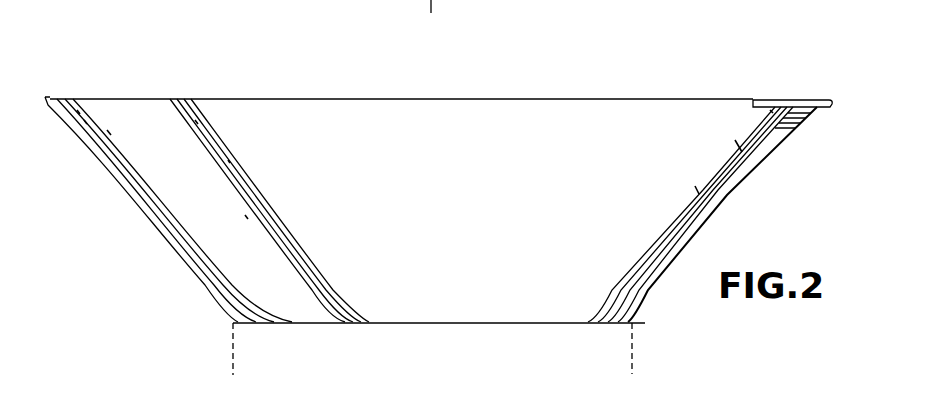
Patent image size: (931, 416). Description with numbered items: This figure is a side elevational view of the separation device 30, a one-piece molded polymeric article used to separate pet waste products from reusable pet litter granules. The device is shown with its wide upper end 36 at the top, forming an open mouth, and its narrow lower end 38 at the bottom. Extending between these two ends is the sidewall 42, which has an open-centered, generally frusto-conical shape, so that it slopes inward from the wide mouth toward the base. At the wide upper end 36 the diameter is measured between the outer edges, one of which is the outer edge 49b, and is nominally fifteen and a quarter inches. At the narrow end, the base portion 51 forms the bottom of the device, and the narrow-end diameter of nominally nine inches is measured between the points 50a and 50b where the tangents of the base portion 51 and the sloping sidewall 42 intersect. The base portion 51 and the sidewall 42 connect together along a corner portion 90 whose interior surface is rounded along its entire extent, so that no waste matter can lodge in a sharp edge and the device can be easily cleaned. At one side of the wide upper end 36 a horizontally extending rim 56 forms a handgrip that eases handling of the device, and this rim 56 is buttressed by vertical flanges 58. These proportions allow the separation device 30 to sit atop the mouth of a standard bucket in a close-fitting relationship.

The separation device 30 is at (728, 50).
The wide upper end 36 is at (100, 98).
The narrow lower end 38 is at (300, 326).
The sidewall 42 is at (134, 196).
The outer edge 49b is at (455, 1).
The tangent intersection point 50a is at (232, 362).
The tangent intersection point 50b is at (633, 362).
The base portion 51 is at (455, 326).
The rim 56 is at (811, 98).
The vertical flange 58 is at (793, 125).
The corner portion 90 is at (642, 318).